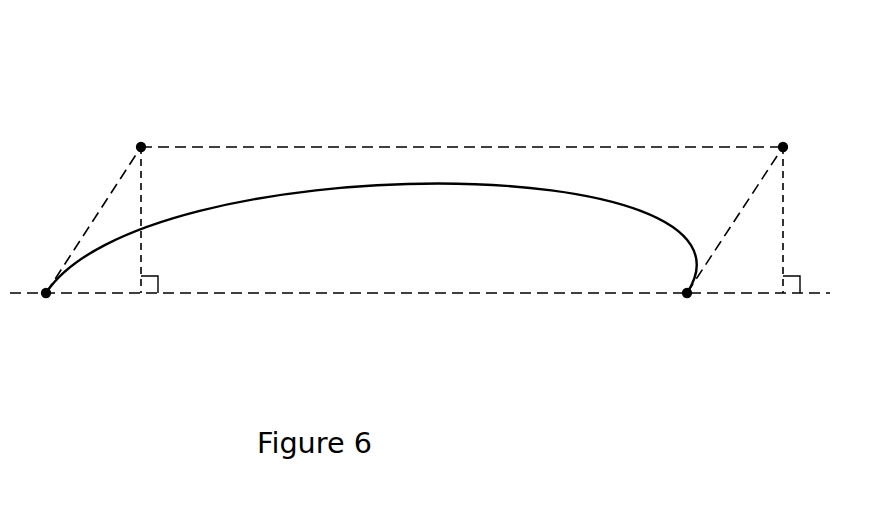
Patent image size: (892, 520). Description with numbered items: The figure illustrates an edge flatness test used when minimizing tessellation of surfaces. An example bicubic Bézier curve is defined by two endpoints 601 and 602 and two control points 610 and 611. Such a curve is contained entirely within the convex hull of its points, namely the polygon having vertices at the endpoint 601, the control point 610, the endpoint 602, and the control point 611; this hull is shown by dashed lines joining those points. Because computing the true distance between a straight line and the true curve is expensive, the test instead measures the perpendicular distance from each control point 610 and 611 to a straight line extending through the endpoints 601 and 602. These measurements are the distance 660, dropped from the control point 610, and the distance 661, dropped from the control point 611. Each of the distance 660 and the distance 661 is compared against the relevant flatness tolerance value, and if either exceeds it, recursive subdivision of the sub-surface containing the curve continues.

The endpoint 601 is at (46, 297).
The endpoint 602 is at (687, 297).
The control point 610 is at (142, 146).
The control point 611 is at (782, 146).
The distance 660 is at (142, 231).
The distance 661 is at (785, 226).